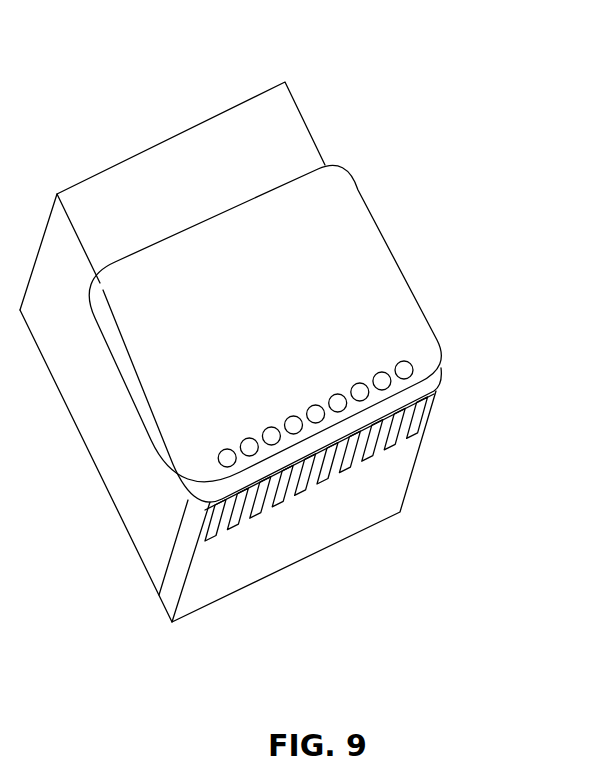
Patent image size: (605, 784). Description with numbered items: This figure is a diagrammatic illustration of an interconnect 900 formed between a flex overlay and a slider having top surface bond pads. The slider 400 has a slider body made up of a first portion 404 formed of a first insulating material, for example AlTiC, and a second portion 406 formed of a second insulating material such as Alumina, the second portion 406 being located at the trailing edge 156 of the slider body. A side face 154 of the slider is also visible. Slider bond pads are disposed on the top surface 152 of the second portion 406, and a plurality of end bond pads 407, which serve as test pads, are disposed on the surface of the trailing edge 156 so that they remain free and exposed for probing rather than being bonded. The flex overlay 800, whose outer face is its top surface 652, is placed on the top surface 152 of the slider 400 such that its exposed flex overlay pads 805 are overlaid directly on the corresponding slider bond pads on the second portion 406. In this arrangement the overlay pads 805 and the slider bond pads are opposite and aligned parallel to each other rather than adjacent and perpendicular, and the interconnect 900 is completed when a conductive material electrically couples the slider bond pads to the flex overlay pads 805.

The interconnect 900 is at (265, 334).
The slider 400 is at (251, 353).
The top surface 152 is at (206, 191).
The side face of housing 154 is at (76, 173).
The trailing edge 156 is at (320, 538).
The first portion 404 is at (127, 538).
The second portion 406 is at (172, 602).
The end bond pads 407 is at (403, 435).
The flex overlay 800 is at (300, 326).
The top surface 652 is at (283, 308).
The flex overlay pads 805 is at (359, 383).